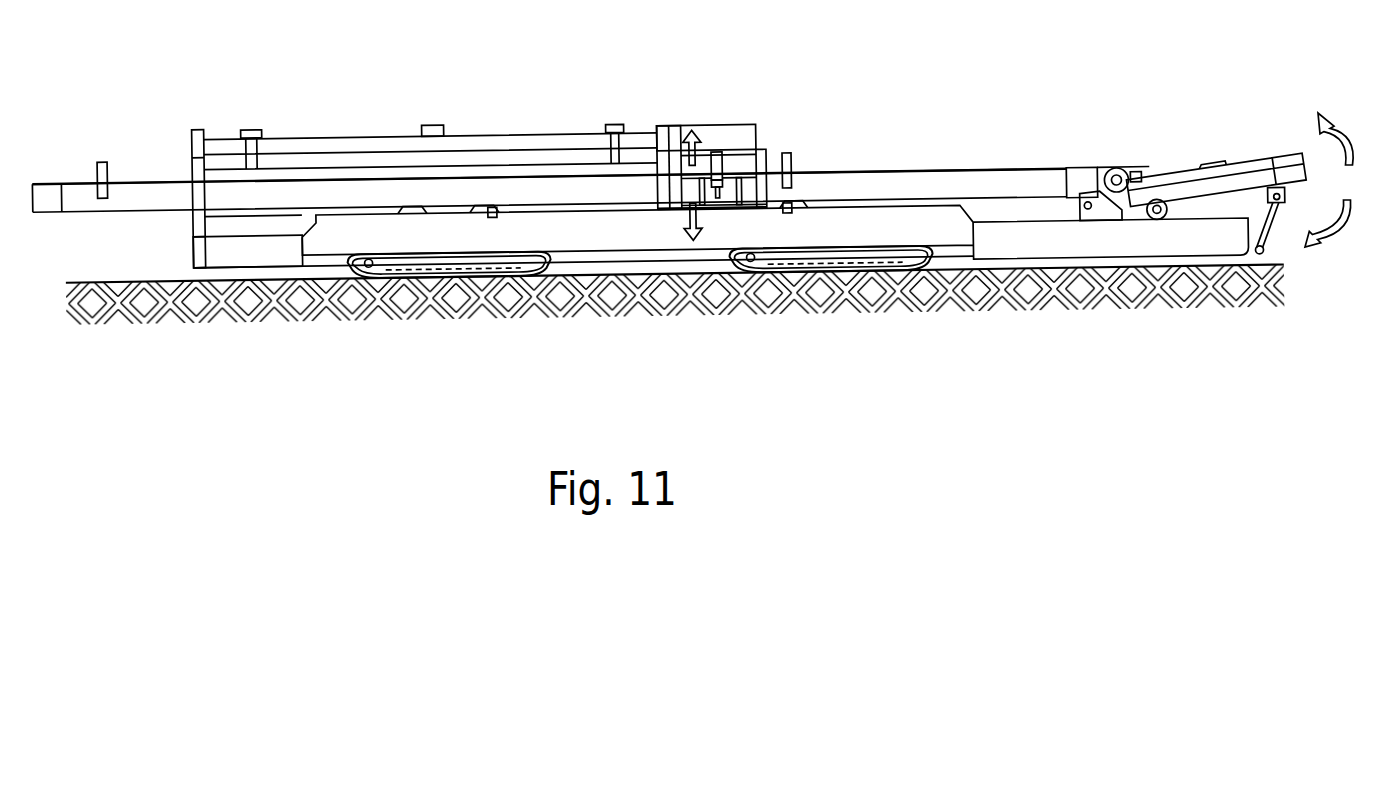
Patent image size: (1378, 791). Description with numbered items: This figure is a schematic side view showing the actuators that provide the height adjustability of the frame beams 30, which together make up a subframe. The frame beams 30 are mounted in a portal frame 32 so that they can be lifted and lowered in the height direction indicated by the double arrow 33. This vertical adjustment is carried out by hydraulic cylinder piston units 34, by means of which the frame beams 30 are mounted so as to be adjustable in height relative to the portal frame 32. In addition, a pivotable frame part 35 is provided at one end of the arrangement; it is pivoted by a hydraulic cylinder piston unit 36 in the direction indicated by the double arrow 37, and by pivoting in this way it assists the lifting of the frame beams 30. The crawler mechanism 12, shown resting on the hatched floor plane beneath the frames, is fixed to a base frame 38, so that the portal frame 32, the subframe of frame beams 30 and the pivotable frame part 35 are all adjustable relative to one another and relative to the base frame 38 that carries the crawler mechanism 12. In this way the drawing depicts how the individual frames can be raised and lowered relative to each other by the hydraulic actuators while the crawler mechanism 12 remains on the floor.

The crawler mechanism 12 is at (473, 270).
The frame beams 30 is at (163, 190).
The portal frame 32 is at (716, 133).
The double arrow 33 is at (672, 125).
The hydraulic cylinder piston units 34 is at (715, 168).
The pivotable frame part 35 is at (1178, 188).
The hydraulic cylinder piston unit 36 is at (1268, 228).
The double arrow 37 is at (1338, 117).
The base frame 38 is at (265, 253).